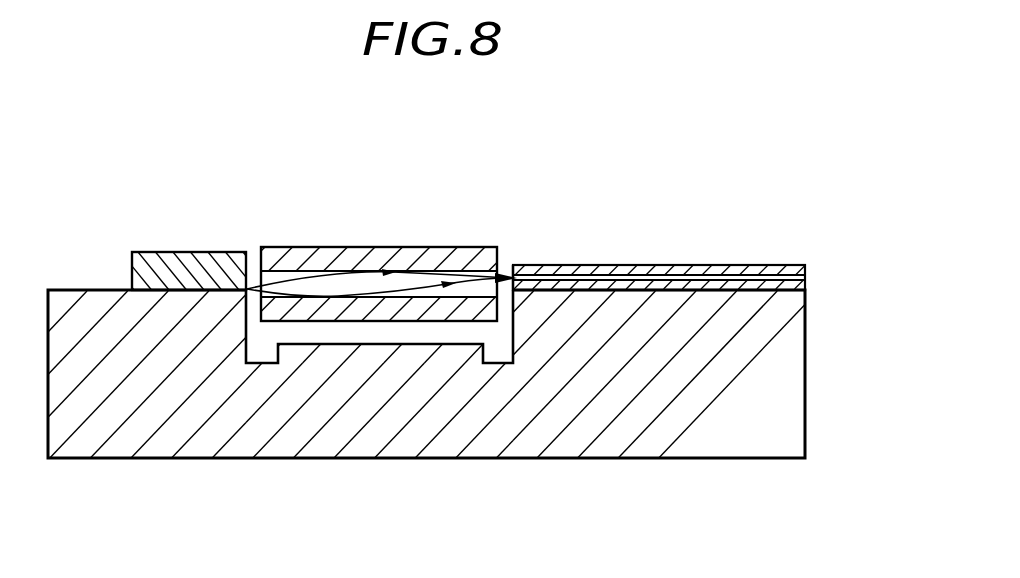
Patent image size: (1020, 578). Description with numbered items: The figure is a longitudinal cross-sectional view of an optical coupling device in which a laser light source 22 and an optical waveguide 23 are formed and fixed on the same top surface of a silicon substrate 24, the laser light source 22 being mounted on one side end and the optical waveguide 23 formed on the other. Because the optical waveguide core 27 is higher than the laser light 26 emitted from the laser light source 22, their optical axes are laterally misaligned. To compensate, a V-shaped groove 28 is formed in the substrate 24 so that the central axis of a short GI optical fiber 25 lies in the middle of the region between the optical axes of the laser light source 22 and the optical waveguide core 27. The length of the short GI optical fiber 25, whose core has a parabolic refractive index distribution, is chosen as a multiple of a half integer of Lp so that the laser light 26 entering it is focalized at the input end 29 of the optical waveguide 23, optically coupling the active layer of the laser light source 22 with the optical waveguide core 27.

The laser light source 22 is at (156, 252).
The optical waveguide 23 is at (797, 179).
The silicon substrate 24 is at (497, 433).
The short GI optical fiber 25 is at (372, 124).
The laser light 26 is at (248, 288).
The optical waveguide core 27 is at (626, 266).
The V-shaped groove 28 is at (367, 338).
The input end of the optical waveguide 29 is at (517, 264).